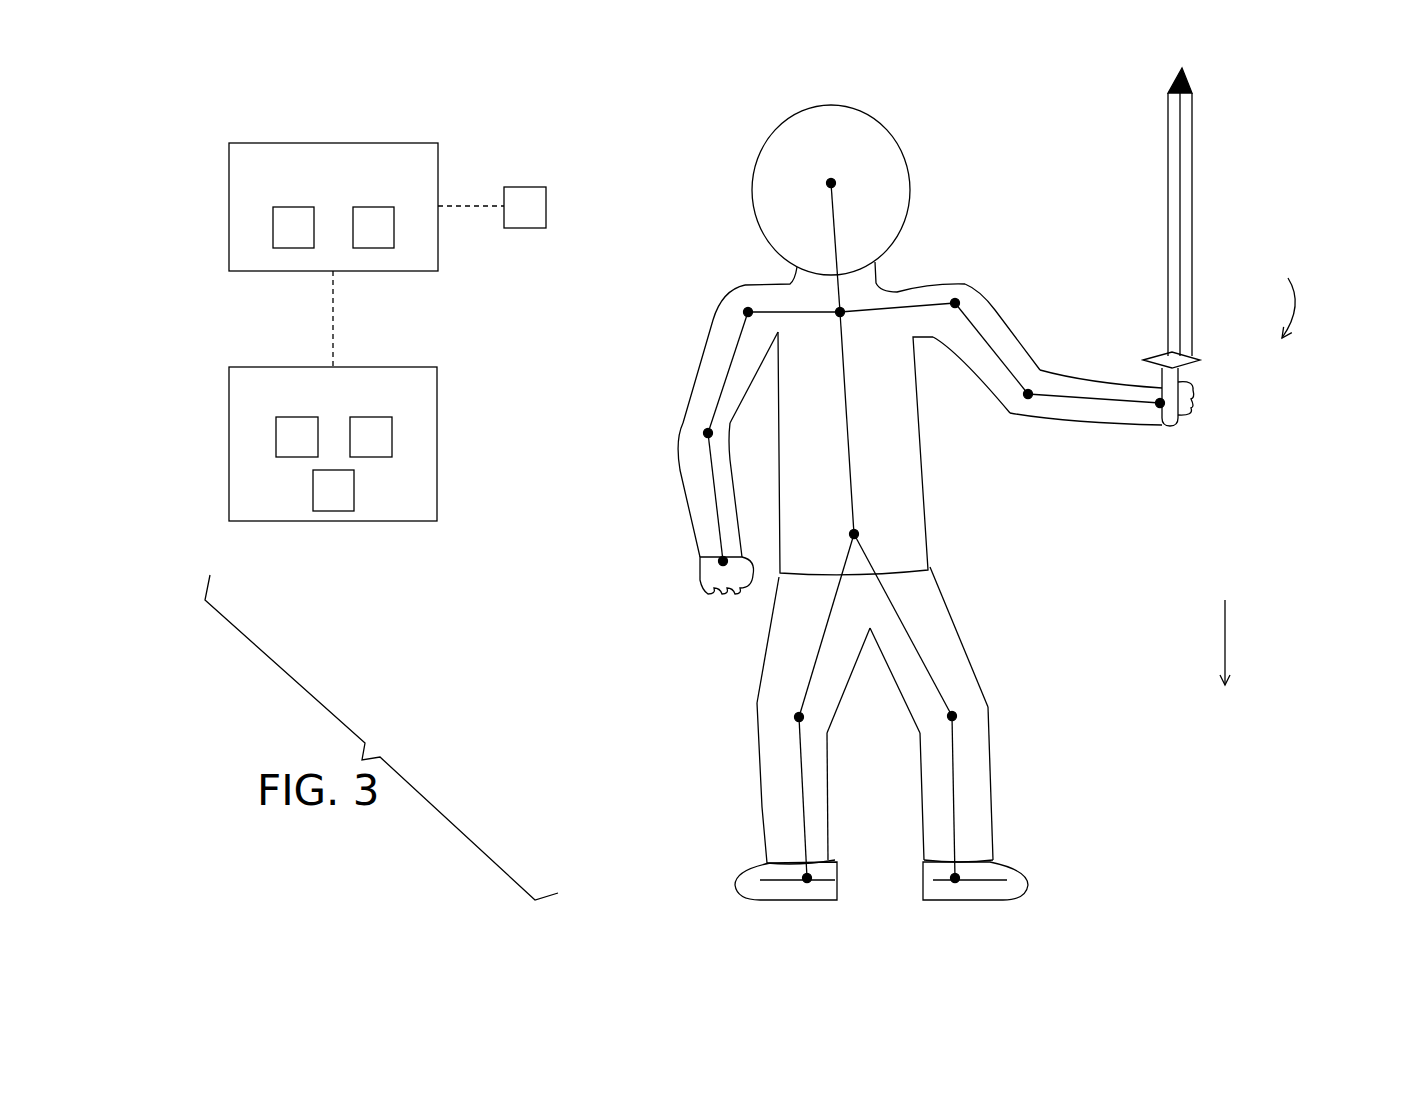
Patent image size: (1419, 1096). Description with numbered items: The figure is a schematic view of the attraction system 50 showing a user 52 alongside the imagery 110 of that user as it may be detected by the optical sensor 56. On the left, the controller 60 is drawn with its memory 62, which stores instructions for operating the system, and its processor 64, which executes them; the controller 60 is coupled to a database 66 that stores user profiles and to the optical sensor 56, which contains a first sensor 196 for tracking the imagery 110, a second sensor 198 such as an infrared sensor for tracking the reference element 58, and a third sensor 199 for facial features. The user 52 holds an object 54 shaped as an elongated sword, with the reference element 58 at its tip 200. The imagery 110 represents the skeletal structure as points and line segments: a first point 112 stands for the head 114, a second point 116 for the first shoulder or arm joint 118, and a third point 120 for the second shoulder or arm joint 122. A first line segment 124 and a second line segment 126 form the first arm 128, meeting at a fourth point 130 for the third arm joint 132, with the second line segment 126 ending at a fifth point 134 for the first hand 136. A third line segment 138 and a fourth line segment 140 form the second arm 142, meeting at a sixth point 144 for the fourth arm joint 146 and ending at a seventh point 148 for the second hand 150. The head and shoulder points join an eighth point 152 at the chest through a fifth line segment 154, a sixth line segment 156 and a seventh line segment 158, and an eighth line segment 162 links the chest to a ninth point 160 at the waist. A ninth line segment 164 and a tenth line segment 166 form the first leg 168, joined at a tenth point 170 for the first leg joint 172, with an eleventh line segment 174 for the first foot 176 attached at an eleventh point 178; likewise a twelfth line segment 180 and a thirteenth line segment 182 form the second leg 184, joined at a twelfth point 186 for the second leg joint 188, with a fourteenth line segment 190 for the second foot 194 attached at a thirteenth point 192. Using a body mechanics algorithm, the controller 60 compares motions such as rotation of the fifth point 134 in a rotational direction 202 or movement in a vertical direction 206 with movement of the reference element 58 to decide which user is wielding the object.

The attraction system 50 is at (1330, 178).
The user 52 is at (700, 202).
The object 54 is at (1185, 190).
The optical sensor 56 is at (385, 367).
The reference element 58 is at (1170, 100).
The controller 60 is at (385, 143).
The memory 62 is at (290, 248).
The processor 64 is at (373, 248).
The database 66 is at (518, 187).
The imagery 110 is at (872, 234).
The first point 112 is at (838, 182).
The head 114 is at (780, 137).
The second point 116 is at (968, 282).
The first shoulder or arm joint 118 is at (1013, 302).
The third point 120 is at (740, 290).
The second shoulder or arm joint 122 is at (713, 287).
The first line segment 124 is at (992, 347).
The second line segment 126 is at (1095, 420).
The first arm 128 is at (1110, 432).
The fourth point 130 is at (1040, 372).
The third arm joint 132 is at (1005, 420).
The fifth point 134 is at (1165, 420).
The first hand 136 is at (1192, 393).
The third line segment 138 is at (727, 370).
The fourth line segment 140 is at (712, 497).
The second arm 142 is at (662, 382).
The sixth point 144 is at (680, 423).
The fourth arm joint 146 is at (663, 441).
The seventh point 148 is at (718, 558).
The second hand 150 is at (700, 578).
The eighth point 152 is at (838, 318).
The fifth line segment 154 is at (840, 215).
The sixth line segment 156 is at (897, 297).
The seventh line segment 158 is at (778, 305).
The ninth point 160 is at (858, 532).
The eighth line segment 162 is at (852, 450).
The ninth line segment 164 is at (918, 652).
The tenth line segment 166 is at (960, 800).
The first leg 168 is at (1040, 670).
The tenth point 170 is at (958, 716).
The first leg joint 172 is at (997, 712).
The eleventh line segment 174 is at (992, 880).
The first foot 176 is at (1040, 872).
The eleventh point 178 is at (930, 880).
The twelfth line segment 180 is at (815, 672).
The thirteenth line segment 182 is at (800, 800).
The second leg 184 is at (725, 812).
The twelfth point 186 is at (796, 716).
The second leg joint 188 is at (740, 724).
The fourteenth line segment 190 is at (770, 880).
The thirteenth point 192 is at (833, 880).
The second foot 194 is at (745, 895).
The first sensor 196 is at (276, 437).
The second sensor 198 is at (392, 437).
The third sensor 199 is at (333, 511).
The tip 200 is at (1214, 218).
The rotational direction 202 is at (1297, 303).
The vertical direction 206 is at (1225, 640).